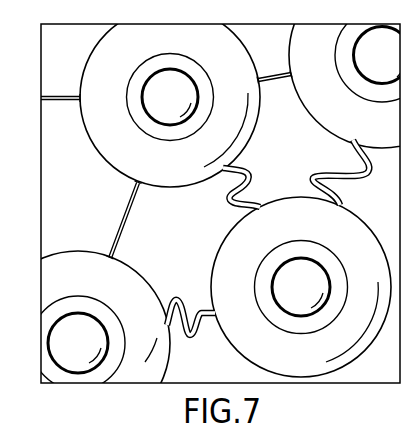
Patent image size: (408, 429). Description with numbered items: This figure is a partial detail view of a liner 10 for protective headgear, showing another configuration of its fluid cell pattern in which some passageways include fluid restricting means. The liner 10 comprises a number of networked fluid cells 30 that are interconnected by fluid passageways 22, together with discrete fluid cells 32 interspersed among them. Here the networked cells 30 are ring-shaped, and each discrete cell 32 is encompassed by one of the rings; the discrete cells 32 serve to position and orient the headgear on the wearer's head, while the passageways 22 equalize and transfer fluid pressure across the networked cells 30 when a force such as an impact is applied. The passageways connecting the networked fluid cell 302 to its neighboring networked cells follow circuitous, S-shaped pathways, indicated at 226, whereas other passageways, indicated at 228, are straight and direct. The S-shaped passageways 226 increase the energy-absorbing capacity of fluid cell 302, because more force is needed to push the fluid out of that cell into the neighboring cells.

The liner 10 is at (204, 214).
The fluid passageways 22 is at (205, 203).
The networked fluid cells 30 is at (91, 160).
The discrete fluid cells 32 is at (183, 107).
The S-shaped fluid passageways 226 is at (352, 152).
The straight fluid passageways 228 is at (276, 79).
The networked fluid cell 302 is at (123, 83).